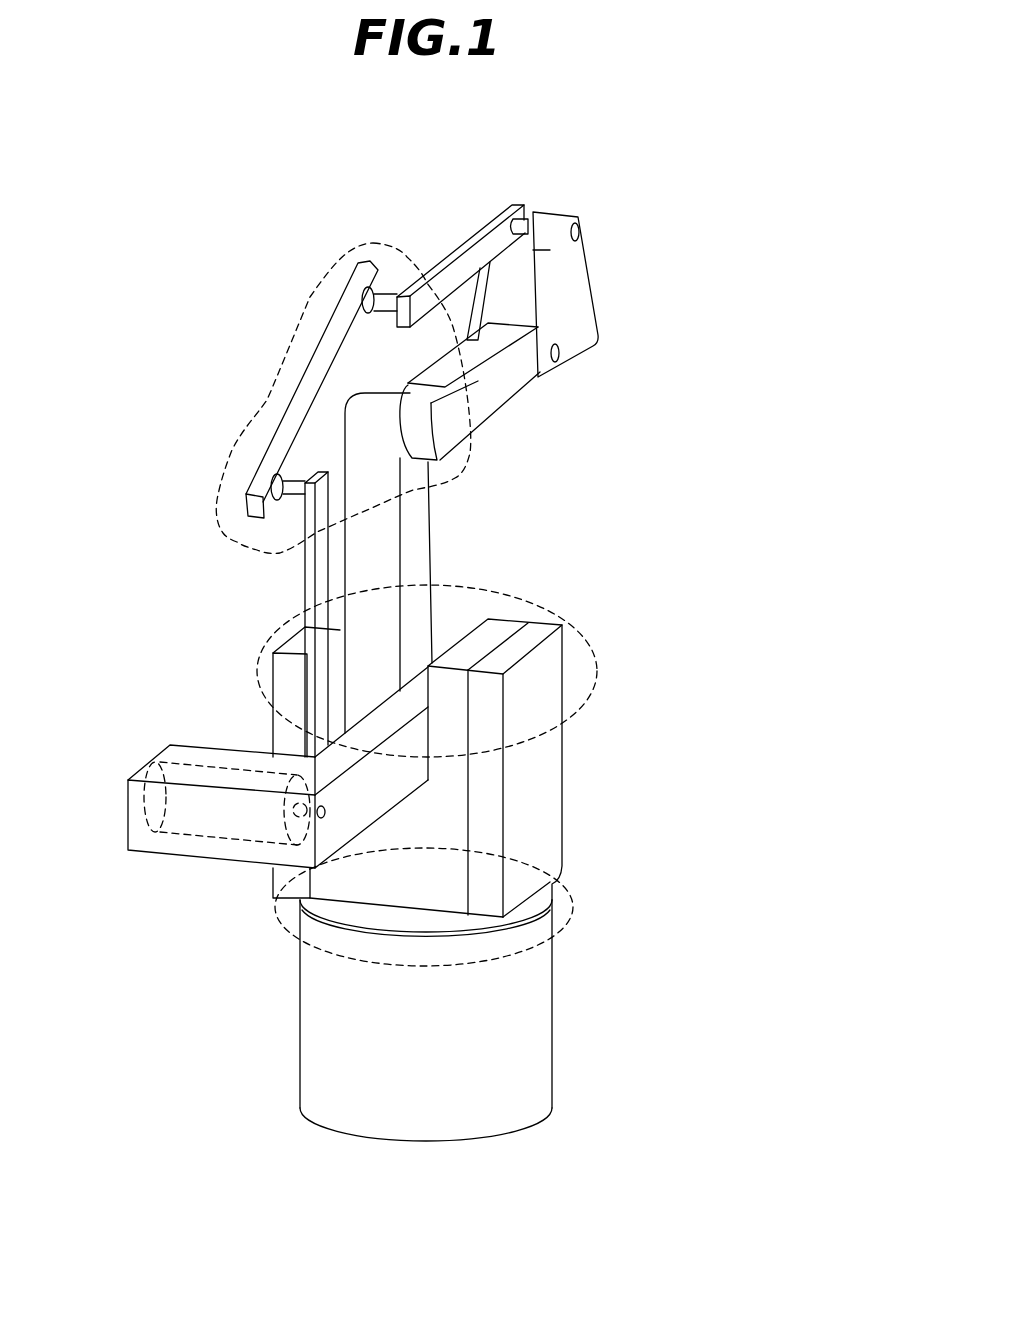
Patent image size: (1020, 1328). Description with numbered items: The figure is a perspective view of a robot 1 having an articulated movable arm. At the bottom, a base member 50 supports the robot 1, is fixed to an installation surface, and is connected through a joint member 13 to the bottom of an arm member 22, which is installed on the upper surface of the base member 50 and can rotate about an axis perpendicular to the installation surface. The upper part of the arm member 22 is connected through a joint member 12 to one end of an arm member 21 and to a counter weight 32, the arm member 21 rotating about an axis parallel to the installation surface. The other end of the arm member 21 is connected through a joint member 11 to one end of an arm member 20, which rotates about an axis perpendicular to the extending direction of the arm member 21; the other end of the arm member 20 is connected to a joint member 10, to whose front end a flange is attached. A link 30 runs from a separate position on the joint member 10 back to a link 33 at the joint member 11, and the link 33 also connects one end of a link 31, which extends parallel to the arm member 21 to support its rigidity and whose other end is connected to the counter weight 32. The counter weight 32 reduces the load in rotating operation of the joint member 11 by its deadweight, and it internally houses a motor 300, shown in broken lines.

The robot 1 is at (664, 213).
The joint member 10 is at (568, 304).
The joint member 11 is at (310, 297).
The joint member 12 is at (594, 672).
The joint member 13 is at (577, 907).
The arm member 20 is at (480, 404).
The arm member 21 is at (417, 547).
The arm member 22 is at (533, 777).
The link 30 is at (463, 267).
The link 31 is at (305, 572).
The counter weight 32 is at (197, 838).
The link 33 is at (315, 403).
The motor 300 is at (178, 745).
The base member 50 is at (430, 1102).